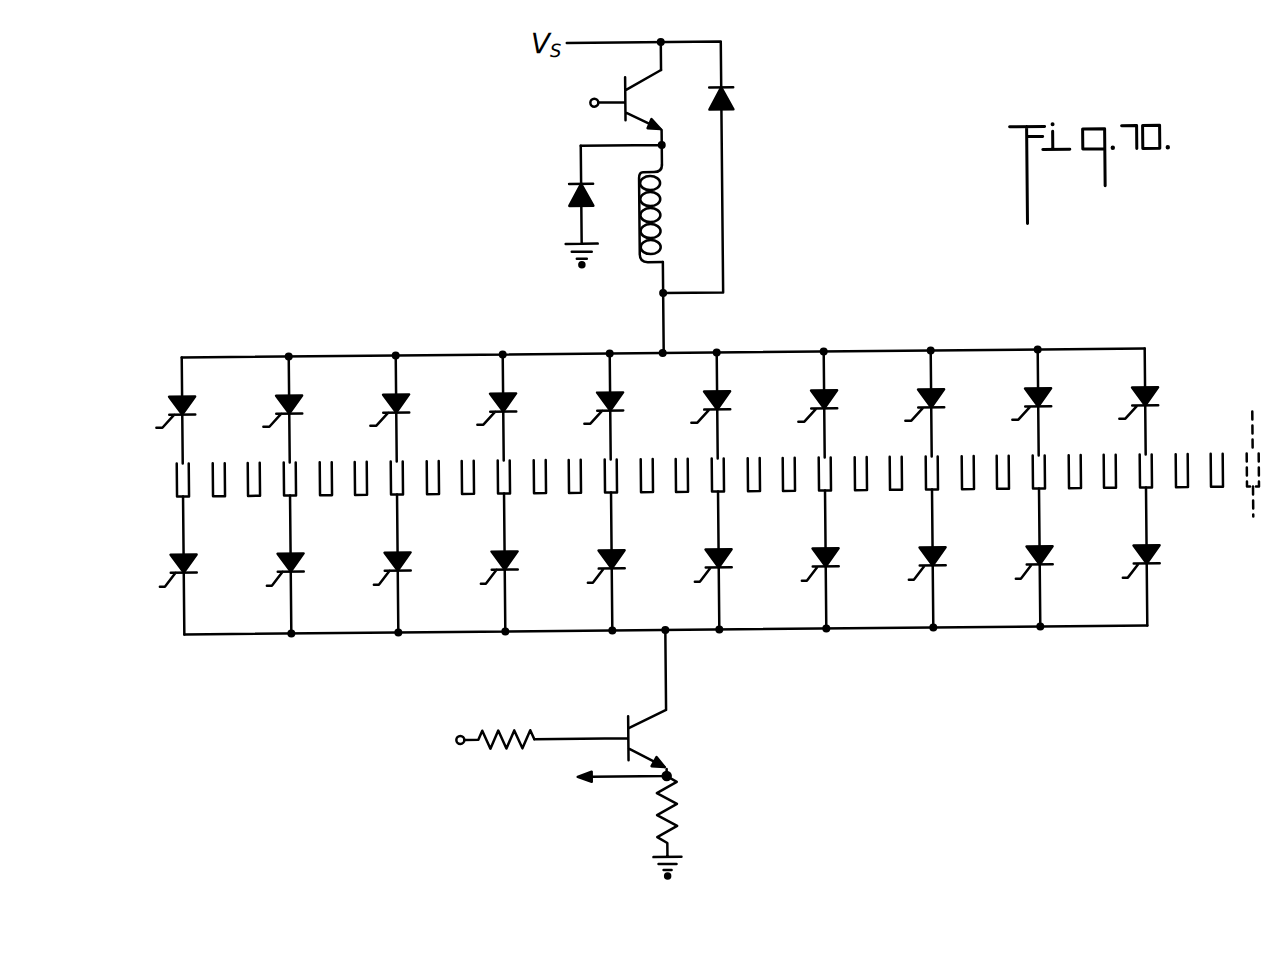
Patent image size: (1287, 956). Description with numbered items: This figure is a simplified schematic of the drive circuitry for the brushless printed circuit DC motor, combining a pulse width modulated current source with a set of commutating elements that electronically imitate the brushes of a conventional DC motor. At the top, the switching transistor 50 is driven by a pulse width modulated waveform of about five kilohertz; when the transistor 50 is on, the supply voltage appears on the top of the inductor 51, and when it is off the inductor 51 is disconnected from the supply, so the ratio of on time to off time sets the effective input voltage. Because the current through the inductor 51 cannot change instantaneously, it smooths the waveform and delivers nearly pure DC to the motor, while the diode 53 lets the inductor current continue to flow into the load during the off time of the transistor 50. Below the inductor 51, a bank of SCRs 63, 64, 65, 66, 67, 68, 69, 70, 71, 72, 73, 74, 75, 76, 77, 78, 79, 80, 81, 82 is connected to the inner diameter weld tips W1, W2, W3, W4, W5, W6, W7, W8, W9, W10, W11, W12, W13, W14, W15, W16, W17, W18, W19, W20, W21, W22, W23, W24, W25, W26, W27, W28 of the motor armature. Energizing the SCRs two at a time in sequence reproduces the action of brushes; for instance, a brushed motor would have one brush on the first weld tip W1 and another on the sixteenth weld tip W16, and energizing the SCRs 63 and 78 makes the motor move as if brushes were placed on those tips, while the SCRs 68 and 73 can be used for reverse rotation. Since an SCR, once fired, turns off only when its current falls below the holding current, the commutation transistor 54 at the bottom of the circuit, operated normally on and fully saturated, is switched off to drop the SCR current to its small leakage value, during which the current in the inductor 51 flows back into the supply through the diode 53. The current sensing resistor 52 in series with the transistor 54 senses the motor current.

The switching transistor 50 is at (636, 99).
The inductor 51 is at (646, 260).
The resistor 52 is at (680, 818).
The diode 53 is at (572, 193).
The commutation transistor 54 is at (655, 728).
The SCR 63 is at (219, 390).
The SCR 64 is at (326, 390).
The SCR 65 is at (433, 390).
The SCR 66 is at (540, 390).
The SCR 67 is at (647, 390).
The SCR 68 is at (754, 390).
The SCR 69 is at (861, 390).
The SCR 70 is at (968, 390).
The SCR 71 is at (1075, 390).
The SCR 72 is at (1182, 390).
The SCR 73 is at (217, 548).
The SCR 74 is at (324, 548).
The SCR 75 is at (431, 548).
The SCR 76 is at (538, 548).
The SCR 77 is at (645, 548).
The SCR 78 is at (752, 548).
The SCR 79 is at (859, 548).
The SCR 80 is at (966, 548).
The SCR 81 is at (1073, 548).
The SCR 82 is at (1180, 548).
The inner diameter weld tip W1 is at (178, 494).
The inner diameter weld tip W2 is at (220, 493).
The inner diameter weld tip W3 is at (255, 493).
The inner diameter weld tip W4 is at (287, 494).
The inner diameter weld tip W5 is at (323, 494).
The inner diameter weld tip W6 is at (361, 493).
The inner diameter weld tip W7 is at (395, 493).
The inner diameter weld tip W8 is at (433, 493).
The inner diameter weld tip W9 is at (468, 493).
The inner diameter weld tip W10 is at (502, 494).
The inner diameter weld tip W11 is at (540, 493).
The inner diameter weld tip W12 is at (575, 493).
The inner diameter weld tip W13 is at (609, 494).
The inner diameter weld tip W14 is at (647, 493).
The inner diameter weld tip W15 is at (682, 493).
The inner diameter weld tip W16 is at (722, 493).
The inner diameter weld tip W17 is at (758, 493).
The inner diameter weld tip W18 is at (796, 493).
The inner diameter weld tip W19 is at (830, 493).
The inner diameter weld tip W20 is at (867, 493).
The inner diameter weld tip W21 is at (897, 493).
The inner diameter weld tip W22 is at (937, 493).
The inner diameter weld tip W23 is at (974, 493).
The inner diameter weld tip W24 is at (1010, 493).
The inner diameter weld tip W25 is at (1044, 493).
The inner diameter weld tip W26 is at (1080, 493).
The inner diameter weld tip W27 is at (1114, 493).
The inner diameter weld tip W28 is at (1150, 492).